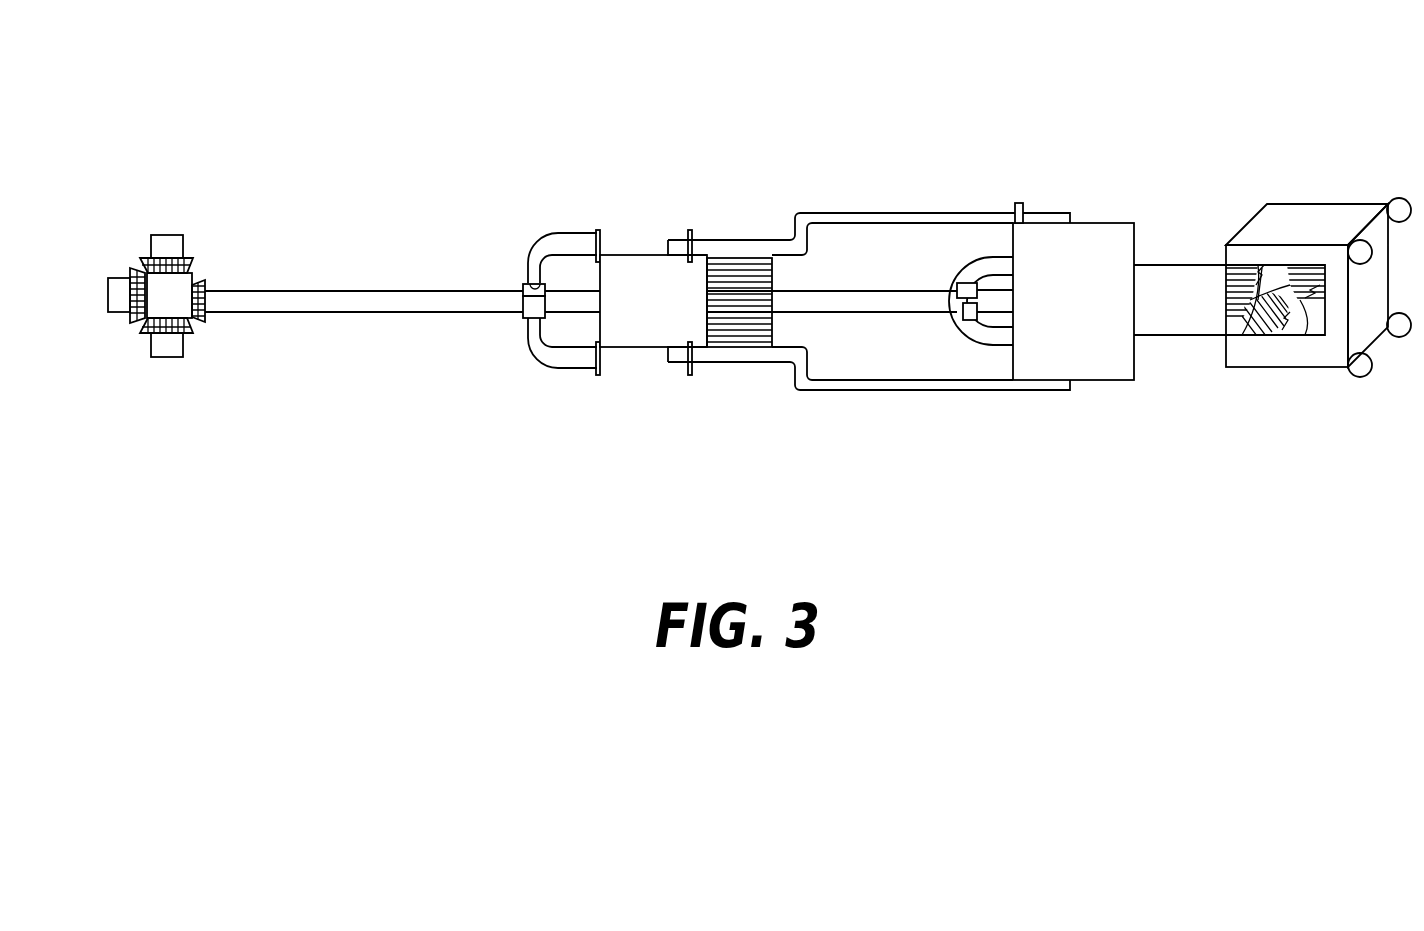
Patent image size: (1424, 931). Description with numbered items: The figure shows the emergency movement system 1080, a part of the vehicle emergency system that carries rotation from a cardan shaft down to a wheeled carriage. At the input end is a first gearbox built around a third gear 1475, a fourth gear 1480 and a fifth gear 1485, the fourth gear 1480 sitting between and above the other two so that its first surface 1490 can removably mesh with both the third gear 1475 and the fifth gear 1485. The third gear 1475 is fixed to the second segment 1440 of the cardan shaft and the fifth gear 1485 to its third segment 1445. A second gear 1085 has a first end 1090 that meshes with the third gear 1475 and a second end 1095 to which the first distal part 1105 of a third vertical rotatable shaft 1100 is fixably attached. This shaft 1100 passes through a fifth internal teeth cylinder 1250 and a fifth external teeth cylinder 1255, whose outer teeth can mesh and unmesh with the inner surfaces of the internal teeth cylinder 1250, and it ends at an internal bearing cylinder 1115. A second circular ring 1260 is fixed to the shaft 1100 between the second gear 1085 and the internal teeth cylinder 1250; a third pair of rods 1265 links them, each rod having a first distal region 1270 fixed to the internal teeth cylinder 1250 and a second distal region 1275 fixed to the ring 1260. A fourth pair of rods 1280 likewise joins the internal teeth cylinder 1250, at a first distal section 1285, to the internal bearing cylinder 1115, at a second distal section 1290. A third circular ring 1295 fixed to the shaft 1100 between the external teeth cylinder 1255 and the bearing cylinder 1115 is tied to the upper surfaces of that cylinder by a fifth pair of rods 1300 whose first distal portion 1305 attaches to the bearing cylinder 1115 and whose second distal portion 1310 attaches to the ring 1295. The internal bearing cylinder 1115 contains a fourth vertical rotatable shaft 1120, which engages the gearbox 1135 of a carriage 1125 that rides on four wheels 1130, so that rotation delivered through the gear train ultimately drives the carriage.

The emergency movement system 1080 is at (745, 47).
The second gear 1085 is at (206, 330).
The first end 1090 is at (187, 300).
The second end 1095 is at (208, 318).
The third vertical rotatable shaft 1100 is at (363, 322).
The first distal part 1105 is at (222, 288).
The internal bearing cylinder 1115 is at (1085, 387).
The fourth vertical rotatable shaft 1120 is at (1182, 343).
The carriage 1125 is at (1277, 375).
The four wheels 1130 is at (1355, 382).
The gearbox 1135 is at (1245, 343).
The fifth internal teeth cylinder 1250 is at (642, 358).
The fifth external teeth cylinder 1255 is at (725, 348).
The second circular ring 1260 is at (525, 312).
The third pair of rods 1265 is at (558, 228).
The first distal region 1270 is at (599, 228).
The second distal region 1275 is at (523, 274).
The fourth pair of rods 1280 is at (852, 200).
The first distal section 1285 is at (691, 228).
The second distal section 1290 is at (1020, 199).
The third circular ring 1295 is at (955, 294).
The fifth pair of rods 1300 is at (980, 352).
The first distal portion 1305 is at (1005, 352).
The second distal portion 1310 is at (965, 315).
The second segment 1440 is at (165, 360).
The third segment 1445 is at (178, 228).
The third gear 1475 is at (140, 336).
The fourth gear 1480 is at (130, 265).
The fifth gear 1485 is at (194, 253).
The first surface 1490 is at (152, 280).